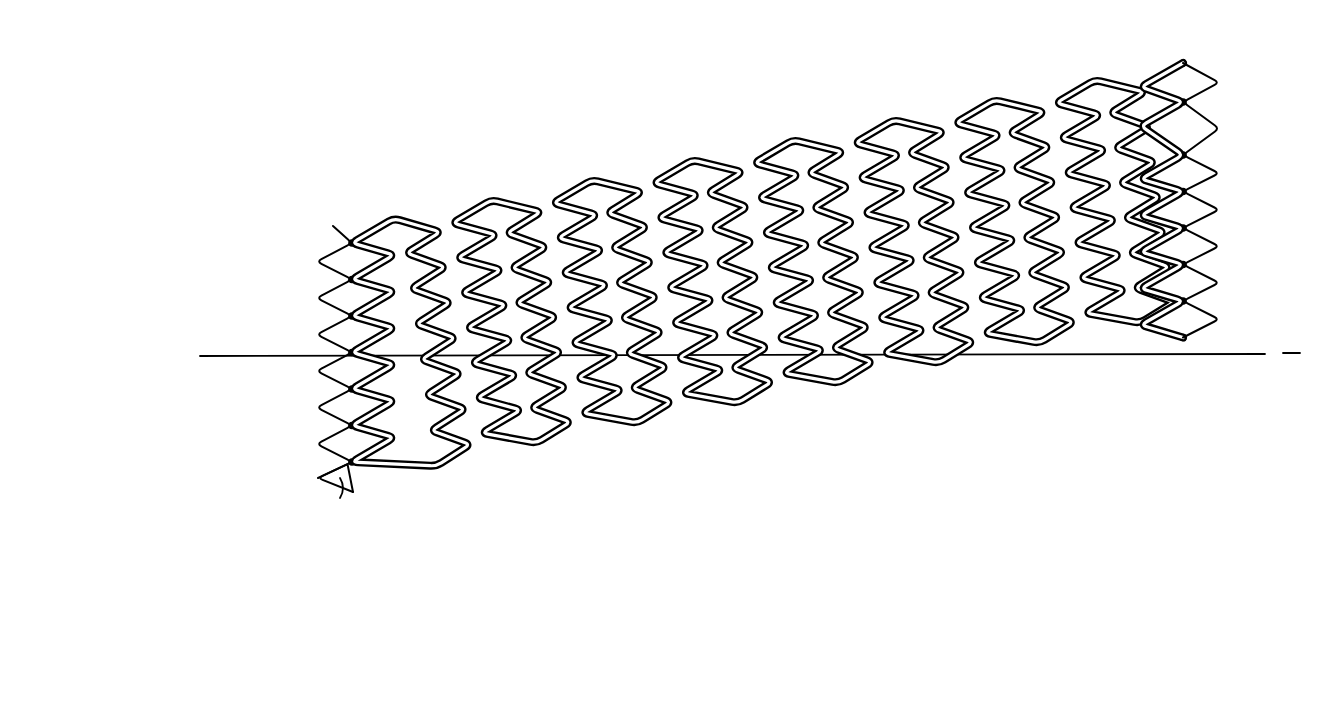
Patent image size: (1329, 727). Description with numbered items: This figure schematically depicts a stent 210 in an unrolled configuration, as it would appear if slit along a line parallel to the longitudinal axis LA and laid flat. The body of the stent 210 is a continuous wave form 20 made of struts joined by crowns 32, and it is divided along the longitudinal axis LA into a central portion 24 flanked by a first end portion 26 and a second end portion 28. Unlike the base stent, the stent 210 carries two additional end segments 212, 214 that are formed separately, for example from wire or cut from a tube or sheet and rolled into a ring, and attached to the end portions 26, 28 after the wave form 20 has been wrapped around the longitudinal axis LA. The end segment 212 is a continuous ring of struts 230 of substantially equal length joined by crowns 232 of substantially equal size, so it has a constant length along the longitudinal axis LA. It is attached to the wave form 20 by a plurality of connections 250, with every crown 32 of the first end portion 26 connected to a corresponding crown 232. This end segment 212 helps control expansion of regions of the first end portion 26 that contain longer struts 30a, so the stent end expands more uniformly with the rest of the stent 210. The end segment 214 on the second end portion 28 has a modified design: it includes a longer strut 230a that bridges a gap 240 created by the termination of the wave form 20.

The stent 210 is at (265, 128).
The wave form 20 is at (870, 392).
The central portion 24 is at (910, 60).
The first end portion 26 is at (522, 153).
The second end portion 28 is at (1162, 16).
The end segment 212 is at (318, 262).
The end segment 214 is at (1214, 206).
The struts 230 is at (345, 470).
The longer strut 230a is at (1215, 106).
The crowns 232 is at (338, 488).
The gap 240 is at (1163, 128).
The connections 250 is at (358, 466).
The longer struts 30a is at (387, 480).
The crowns 32 is at (352, 243).
The longitudinal axis LA is at (190, 361).